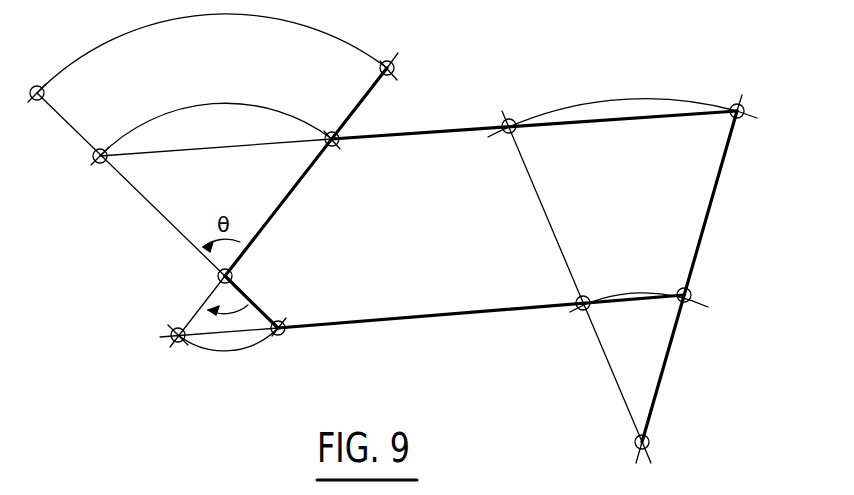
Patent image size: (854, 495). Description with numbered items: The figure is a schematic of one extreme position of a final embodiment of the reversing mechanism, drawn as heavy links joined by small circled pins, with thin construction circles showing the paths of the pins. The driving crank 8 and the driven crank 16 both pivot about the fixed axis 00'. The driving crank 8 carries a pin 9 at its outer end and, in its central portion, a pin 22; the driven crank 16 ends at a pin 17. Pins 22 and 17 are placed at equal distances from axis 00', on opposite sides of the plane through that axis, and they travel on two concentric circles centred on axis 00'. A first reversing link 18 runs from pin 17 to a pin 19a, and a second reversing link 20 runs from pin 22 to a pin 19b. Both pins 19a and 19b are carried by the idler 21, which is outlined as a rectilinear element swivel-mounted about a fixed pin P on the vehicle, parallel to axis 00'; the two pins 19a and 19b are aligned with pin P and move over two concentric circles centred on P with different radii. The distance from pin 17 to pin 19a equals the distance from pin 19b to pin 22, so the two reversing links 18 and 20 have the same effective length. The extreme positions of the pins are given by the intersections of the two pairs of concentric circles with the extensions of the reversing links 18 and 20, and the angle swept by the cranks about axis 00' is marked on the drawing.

The driving crank 8 is at (282, 208).
The pin 9 is at (397, 66).
The driven crank 16 is at (263, 307).
The pin 17 is at (287, 337).
The first reversing link 18 is at (457, 317).
The pin 19a is at (688, 302).
The pin 19b is at (732, 105).
The second reversing link 20 is at (453, 130).
The idler 21 is at (703, 232).
The pin 22 is at (333, 147).
The fixed pin P is at (650, 445).
The fixed axis 00' is at (188, 280).